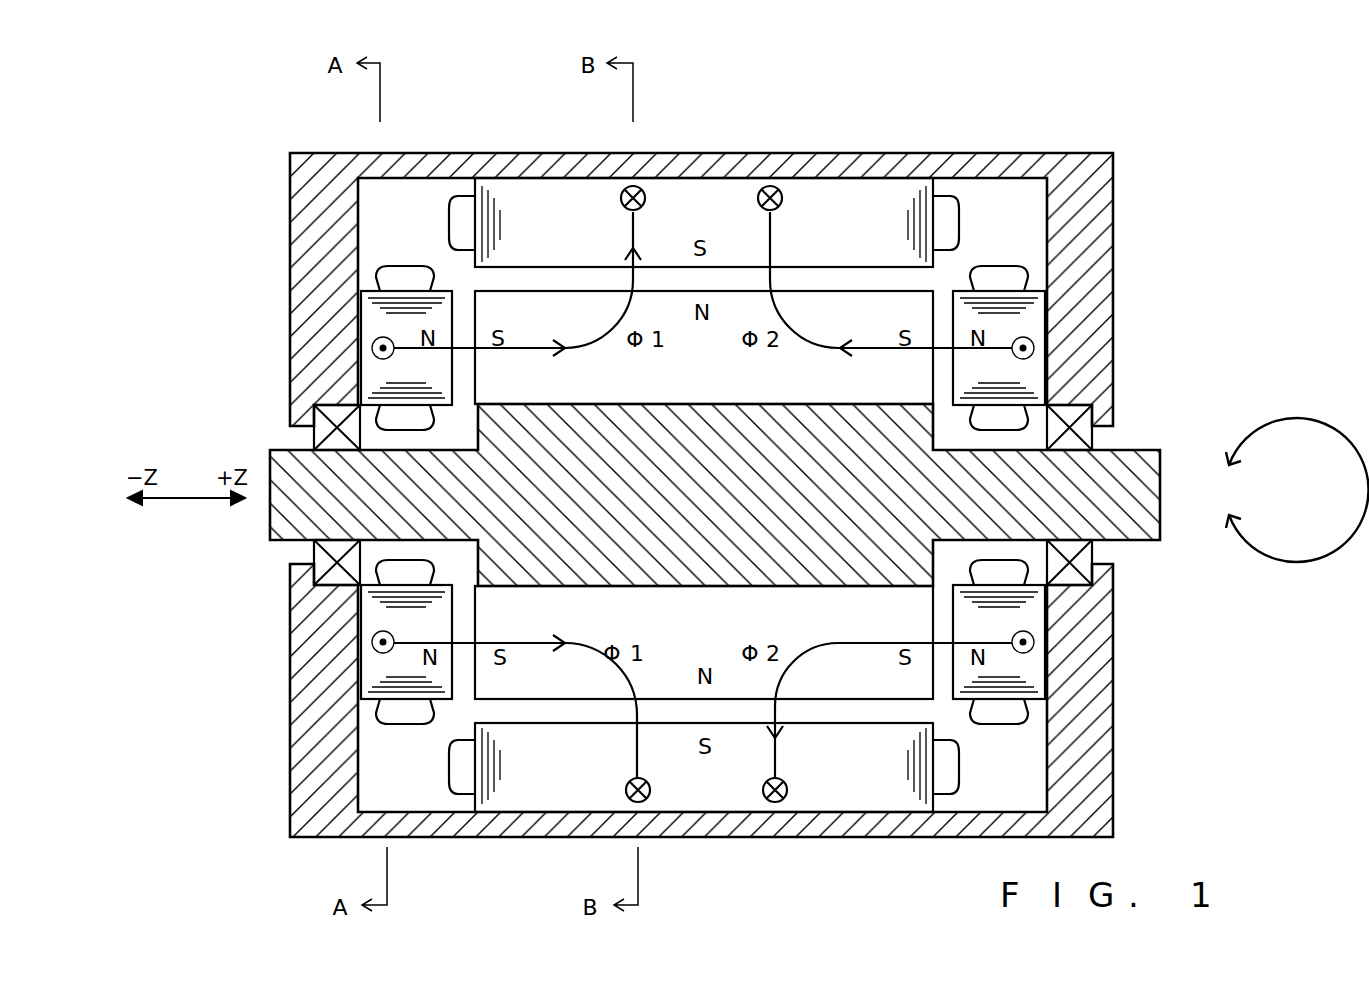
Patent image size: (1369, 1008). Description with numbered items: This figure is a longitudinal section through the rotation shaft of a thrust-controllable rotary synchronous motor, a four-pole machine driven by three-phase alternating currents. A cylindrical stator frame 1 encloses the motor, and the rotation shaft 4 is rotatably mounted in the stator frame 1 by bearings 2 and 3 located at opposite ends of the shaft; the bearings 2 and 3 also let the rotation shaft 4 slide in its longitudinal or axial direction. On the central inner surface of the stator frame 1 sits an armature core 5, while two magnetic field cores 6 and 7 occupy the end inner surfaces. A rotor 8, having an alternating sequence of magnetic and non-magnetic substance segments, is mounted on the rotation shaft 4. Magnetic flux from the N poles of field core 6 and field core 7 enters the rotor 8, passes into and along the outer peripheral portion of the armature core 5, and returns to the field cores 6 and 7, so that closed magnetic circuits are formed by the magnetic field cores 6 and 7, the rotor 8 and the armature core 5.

The stator frame 1 is at (1082, 170).
The bearing 2 is at (310, 436).
The bearing 3 is at (1085, 432).
The rotation shaft 4 is at (1160, 541).
The armature core 5 is at (520, 200).
The magnetic field core 6 is at (380, 384).
The magnetic field core 7 is at (1020, 386).
The rotor 8 is at (728, 335).